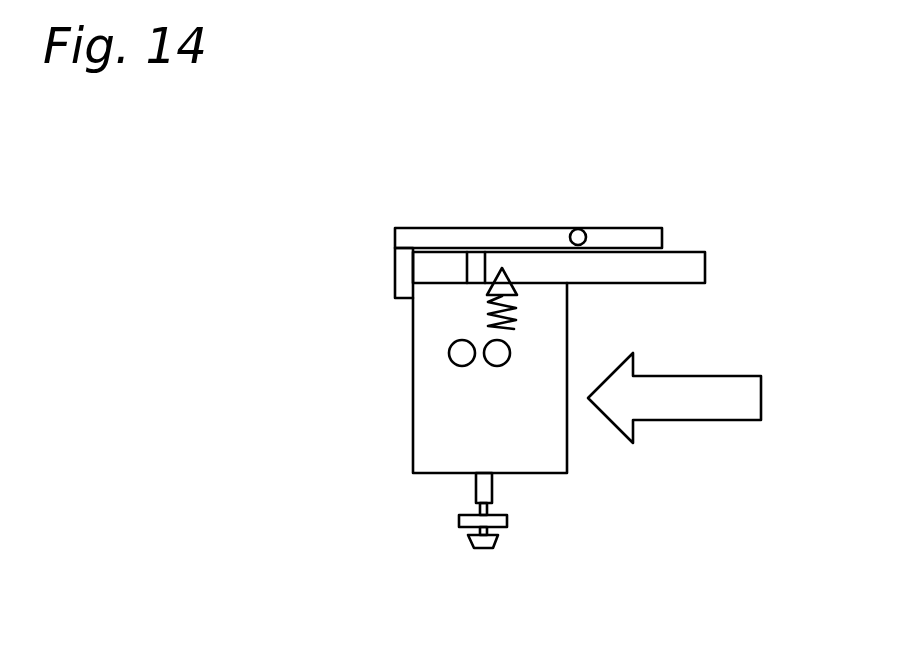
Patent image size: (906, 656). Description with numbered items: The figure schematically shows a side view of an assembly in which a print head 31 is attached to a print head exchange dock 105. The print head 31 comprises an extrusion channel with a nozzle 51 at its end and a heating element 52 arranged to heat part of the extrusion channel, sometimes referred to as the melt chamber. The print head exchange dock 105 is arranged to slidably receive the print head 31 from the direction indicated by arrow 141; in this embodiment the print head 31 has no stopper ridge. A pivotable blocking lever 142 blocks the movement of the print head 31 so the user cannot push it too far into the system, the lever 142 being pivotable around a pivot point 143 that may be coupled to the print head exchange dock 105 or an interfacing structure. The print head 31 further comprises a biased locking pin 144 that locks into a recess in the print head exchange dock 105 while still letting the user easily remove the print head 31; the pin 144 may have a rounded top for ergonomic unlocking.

The pivotable blocking lever 142 is at (440, 233).
The print head exchange dock 105 is at (699, 253).
The pivot point 143 is at (581, 231).
The biased locking pin 144 is at (504, 266).
The print head 31 is at (413, 413).
The heating element 52 is at (459, 520).
The nozzle 51 is at (480, 550).
The arrow 141 is at (708, 411).